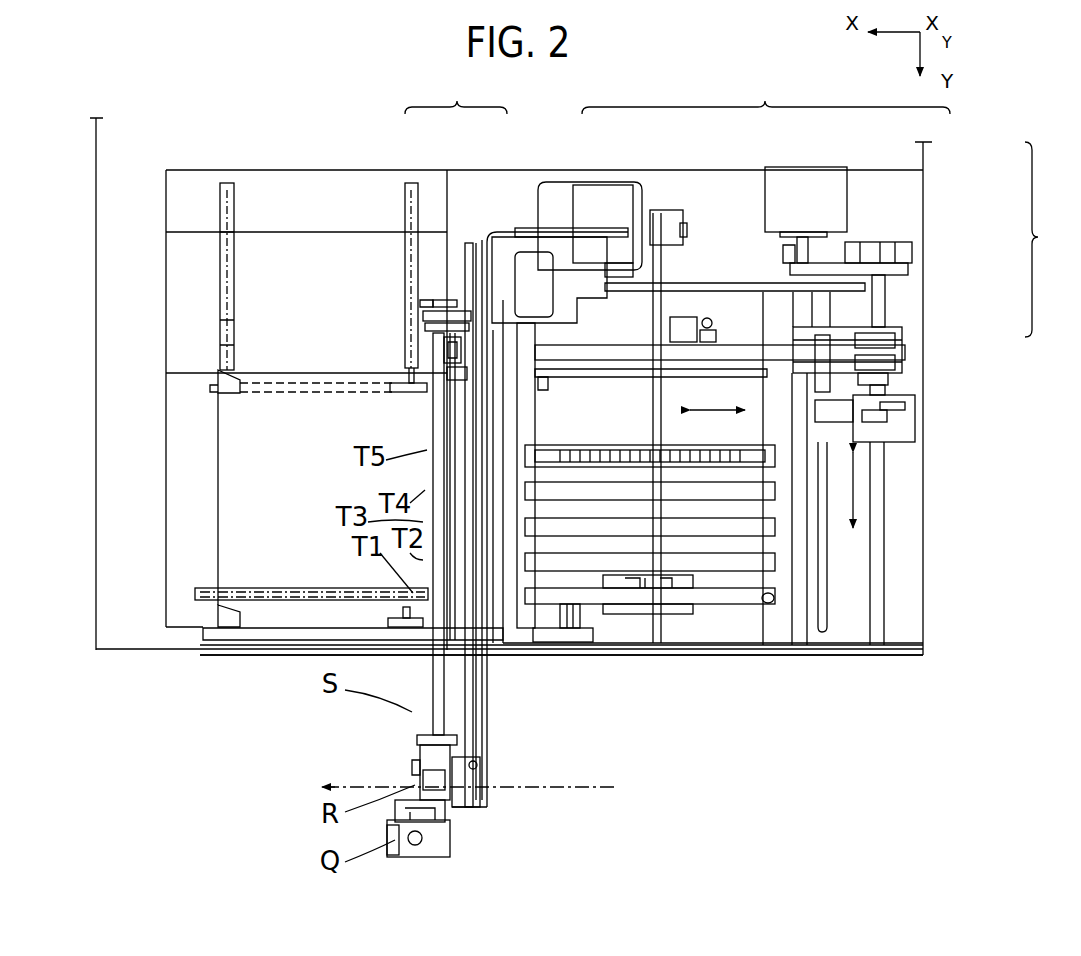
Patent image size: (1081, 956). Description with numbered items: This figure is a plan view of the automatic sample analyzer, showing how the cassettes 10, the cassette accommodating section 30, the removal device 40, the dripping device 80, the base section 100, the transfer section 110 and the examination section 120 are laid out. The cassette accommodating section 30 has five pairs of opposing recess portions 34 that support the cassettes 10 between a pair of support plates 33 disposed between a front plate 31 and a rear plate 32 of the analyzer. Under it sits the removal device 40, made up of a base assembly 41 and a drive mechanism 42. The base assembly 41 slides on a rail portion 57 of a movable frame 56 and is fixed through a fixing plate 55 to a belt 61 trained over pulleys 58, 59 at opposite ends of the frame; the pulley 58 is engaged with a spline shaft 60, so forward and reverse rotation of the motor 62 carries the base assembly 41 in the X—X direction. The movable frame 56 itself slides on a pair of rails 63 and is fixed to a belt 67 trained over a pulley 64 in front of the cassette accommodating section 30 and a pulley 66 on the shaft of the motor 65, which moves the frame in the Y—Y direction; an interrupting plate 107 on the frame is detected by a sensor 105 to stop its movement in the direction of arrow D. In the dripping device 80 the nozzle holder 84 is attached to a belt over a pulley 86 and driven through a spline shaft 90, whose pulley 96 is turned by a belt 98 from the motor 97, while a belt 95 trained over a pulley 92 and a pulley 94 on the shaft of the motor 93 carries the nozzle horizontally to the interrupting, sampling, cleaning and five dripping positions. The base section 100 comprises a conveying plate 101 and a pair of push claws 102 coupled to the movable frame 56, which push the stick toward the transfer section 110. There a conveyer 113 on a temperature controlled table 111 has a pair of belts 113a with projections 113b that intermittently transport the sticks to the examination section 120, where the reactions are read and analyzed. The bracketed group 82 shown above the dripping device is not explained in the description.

The cassette 10 is at (600, 598).
The cassette accommodating section 30 is at (713, 640).
The front plate 31 is at (790, 657).
The rear plate 32 is at (712, 282).
The support plate 33 is at (517, 627).
The recess portion 34 is at (528, 605).
The removal device 40 is at (766, 93).
The base assembly 41 is at (922, 420).
The drive mechanism 42 is at (1051, 239).
The fixing plate 55 is at (822, 345).
The movable frame 56 is at (905, 360).
The rail portion 57 is at (905, 380).
The pulley 58 is at (905, 335).
The pulley 59 is at (448, 345).
The spline shaft 60 is at (877, 528).
The belt 61 is at (607, 345).
The motor 62 is at (790, 180).
The rail 63 is at (823, 556).
The pulley 64 is at (670, 615).
The motor 65 is at (620, 190).
The pulley 66 is at (672, 215).
The belt 67 is at (650, 410).
The dripping device 80 is at (505, 807).
The moving head 82 is at (456, 93).
The nozzle holder 84 is at (440, 835).
The pulley 86 is at (417, 765).
The spline shaft 90 is at (437, 482).
The pulley 92 is at (480, 787).
The motor 93 is at (517, 258).
The pulley 94 is at (466, 262).
The belt 95 is at (437, 425).
The pulley 96 is at (437, 300).
The motor 97 is at (590, 230).
The belt 98 is at (433, 314).
The base section 100 is at (160, 515).
The conveying plate 101 is at (268, 496).
The push claw 102 is at (206, 390).
The sensor 105 is at (716, 322).
The interrupting plate 107 is at (673, 325).
The transfer section 110 is at (160, 358).
The temperature controlled table 111 is at (245, 300).
The conveyer 113 is at (214, 192).
The belt 113a is at (234, 213).
The projection 113b is at (228, 340).
The examination section 120 is at (160, 218).